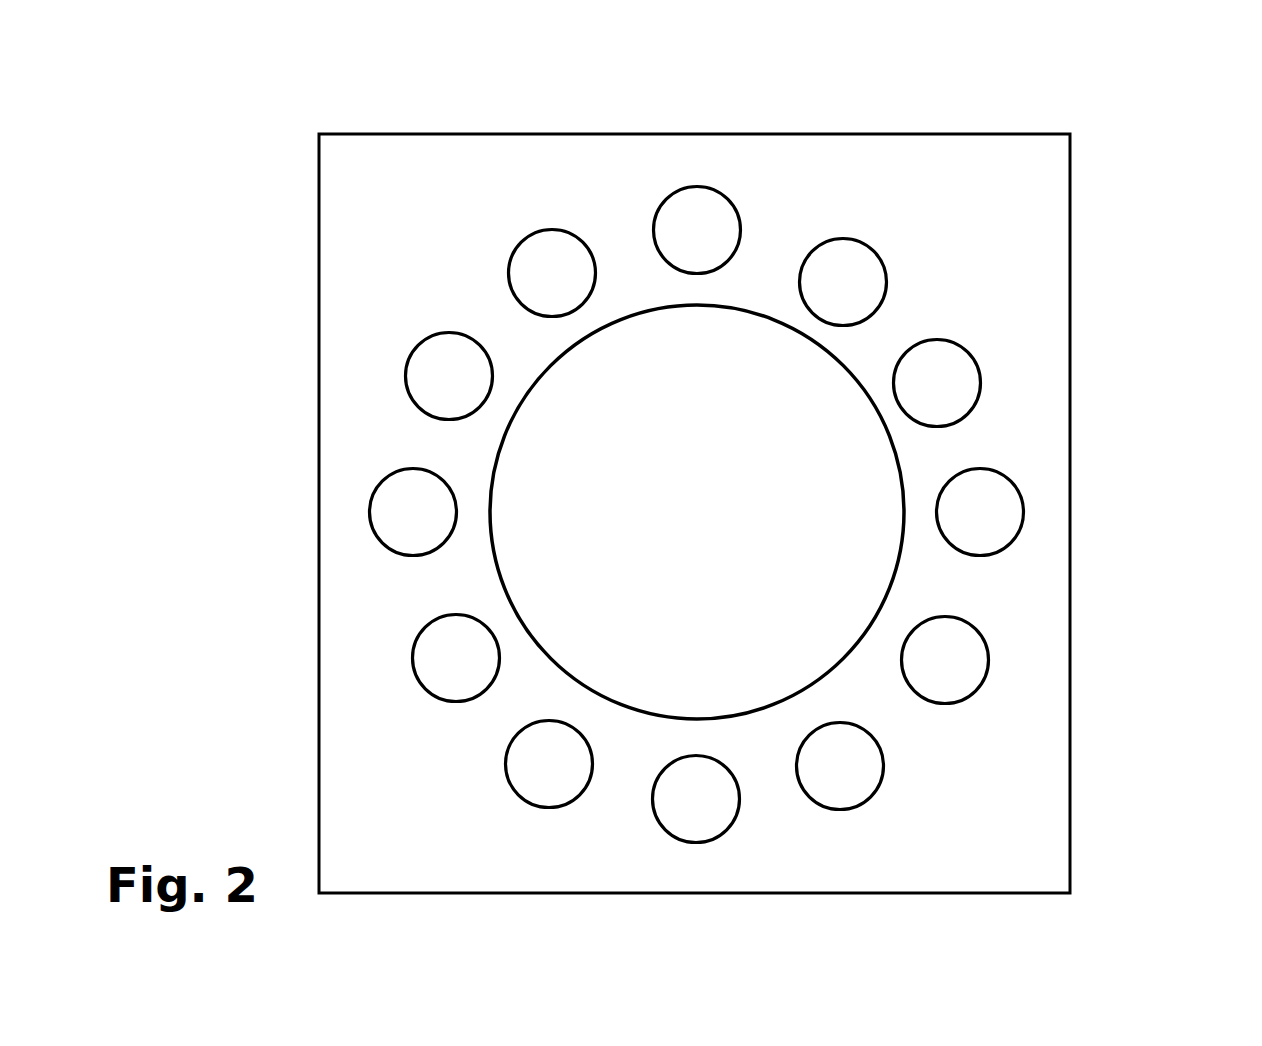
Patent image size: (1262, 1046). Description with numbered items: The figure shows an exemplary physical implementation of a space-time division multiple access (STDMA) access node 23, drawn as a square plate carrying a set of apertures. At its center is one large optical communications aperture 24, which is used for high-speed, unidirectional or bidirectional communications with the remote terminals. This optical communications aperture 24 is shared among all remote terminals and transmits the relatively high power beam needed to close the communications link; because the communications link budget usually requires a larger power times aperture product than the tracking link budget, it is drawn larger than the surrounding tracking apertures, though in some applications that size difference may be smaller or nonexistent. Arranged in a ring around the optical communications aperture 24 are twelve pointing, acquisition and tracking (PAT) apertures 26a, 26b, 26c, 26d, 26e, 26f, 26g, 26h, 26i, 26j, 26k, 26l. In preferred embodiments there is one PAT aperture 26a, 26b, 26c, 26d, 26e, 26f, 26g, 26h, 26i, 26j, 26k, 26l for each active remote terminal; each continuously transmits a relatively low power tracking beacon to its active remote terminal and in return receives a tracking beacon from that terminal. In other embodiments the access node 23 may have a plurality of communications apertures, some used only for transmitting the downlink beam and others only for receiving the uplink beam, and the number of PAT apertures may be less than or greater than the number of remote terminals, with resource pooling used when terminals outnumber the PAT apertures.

The STDMA access node 23 is at (782, 471).
The optical communications aperture 24 is at (683, 487).
The PAT aperture 26a is at (743, 225).
The PAT aperture 26b is at (888, 276).
The PAT aperture 26c is at (960, 361).
The PAT aperture 26d is at (1000, 489).
The PAT aperture 26e is at (979, 641).
The PAT aperture 26f is at (882, 768).
The PAT aperture 26g is at (733, 812).
The PAT aperture 26h is at (510, 779).
The PAT aperture 26i is at (428, 675).
The PAT aperture 26j is at (398, 536).
The PAT aperture 26k is at (422, 358).
The PAT aperture 26l is at (522, 258).